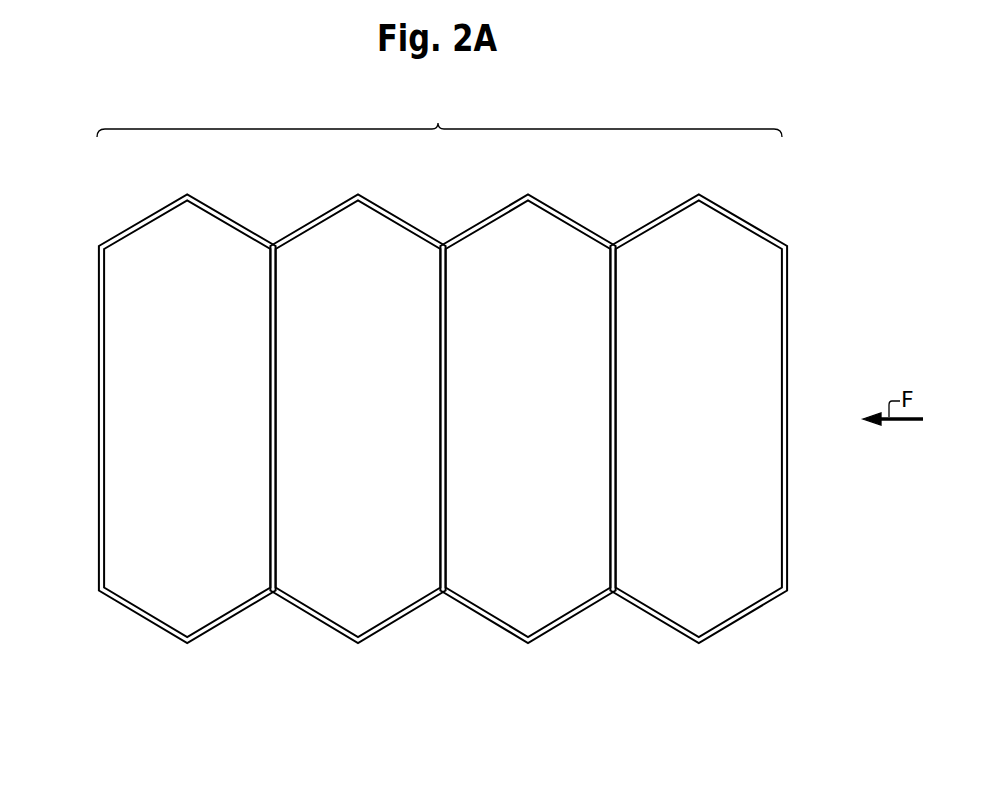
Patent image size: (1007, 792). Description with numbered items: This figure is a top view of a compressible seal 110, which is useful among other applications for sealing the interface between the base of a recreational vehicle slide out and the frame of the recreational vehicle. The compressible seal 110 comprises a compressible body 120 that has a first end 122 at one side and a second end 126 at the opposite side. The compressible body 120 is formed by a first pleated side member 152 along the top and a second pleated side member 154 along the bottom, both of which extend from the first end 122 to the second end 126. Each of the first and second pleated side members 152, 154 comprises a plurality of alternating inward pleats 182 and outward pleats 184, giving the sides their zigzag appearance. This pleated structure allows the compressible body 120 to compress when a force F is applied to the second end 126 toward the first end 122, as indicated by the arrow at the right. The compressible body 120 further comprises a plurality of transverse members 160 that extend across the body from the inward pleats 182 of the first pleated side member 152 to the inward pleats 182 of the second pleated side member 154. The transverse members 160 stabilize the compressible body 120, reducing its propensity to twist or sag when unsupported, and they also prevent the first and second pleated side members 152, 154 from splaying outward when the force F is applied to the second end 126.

The compressible seal 110 is at (425, 706).
The compressible body 120 is at (440, 122).
The first end 122 is at (82, 652).
The second end 126 is at (795, 630).
The first pleated side member 152 is at (320, 213).
The second pleated side member 154 is at (322, 626).
The transverse member 160 is at (105, 398).
The inward pleat 182 is at (99, 246).
The outward pleat 184 is at (187, 194).